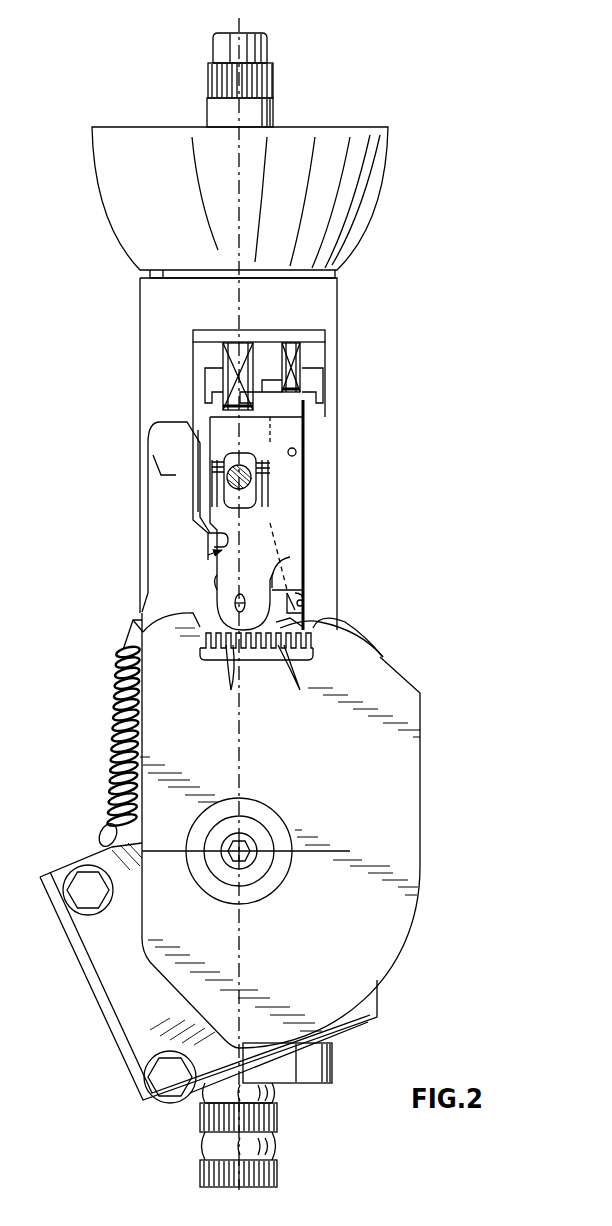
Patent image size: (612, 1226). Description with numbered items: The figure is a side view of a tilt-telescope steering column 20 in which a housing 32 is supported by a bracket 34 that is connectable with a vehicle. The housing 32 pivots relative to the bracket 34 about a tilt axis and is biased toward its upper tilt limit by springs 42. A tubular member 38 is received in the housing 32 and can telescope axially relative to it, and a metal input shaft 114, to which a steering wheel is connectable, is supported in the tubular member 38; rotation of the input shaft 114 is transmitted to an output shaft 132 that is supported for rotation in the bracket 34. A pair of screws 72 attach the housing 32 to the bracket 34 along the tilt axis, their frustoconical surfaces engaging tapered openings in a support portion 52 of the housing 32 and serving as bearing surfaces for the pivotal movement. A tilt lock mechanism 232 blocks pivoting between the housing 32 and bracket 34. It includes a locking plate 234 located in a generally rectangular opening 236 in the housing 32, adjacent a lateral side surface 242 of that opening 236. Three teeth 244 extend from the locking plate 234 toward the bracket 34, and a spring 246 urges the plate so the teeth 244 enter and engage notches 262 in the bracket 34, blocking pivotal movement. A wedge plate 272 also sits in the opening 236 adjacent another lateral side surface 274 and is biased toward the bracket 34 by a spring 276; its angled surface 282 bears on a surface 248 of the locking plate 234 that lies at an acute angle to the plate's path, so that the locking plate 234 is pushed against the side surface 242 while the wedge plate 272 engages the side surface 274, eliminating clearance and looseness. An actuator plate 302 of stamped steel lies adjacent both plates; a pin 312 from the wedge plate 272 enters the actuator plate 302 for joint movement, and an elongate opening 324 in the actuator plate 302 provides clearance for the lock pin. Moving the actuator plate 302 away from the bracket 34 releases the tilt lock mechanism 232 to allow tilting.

The tilt-telescope steering column 20 is at (421, 53).
The input shaft 114 is at (256, 53).
The tubular member 38 is at (322, 276).
The housing 32 is at (342, 322).
The spring 246 is at (207, 345).
The spring 276 is at (322, 350).
The actuator plate 302 is at (223, 432).
The pin 312 is at (297, 448).
The elongate opening 324 is at (277, 504).
The opening 236 is at (222, 540).
The lateral side surface 242 is at (215, 585).
The angled surface 282 is at (290, 557).
The wedge plate 272 is at (307, 583).
The lateral side surface 274 is at (307, 607).
The surface 248 is at (300, 617).
The tilt lock mechanism 232 is at (190, 644).
The locking plate 234 is at (385, 658).
The teeth 244 is at (210, 677).
The notches 262 is at (291, 679).
The springs 42 is at (118, 710).
The support portion 52 is at (383, 826).
The screws 72 is at (252, 868).
The bracket 34 is at (80, 968).
The output shaft 132 is at (258, 1123).